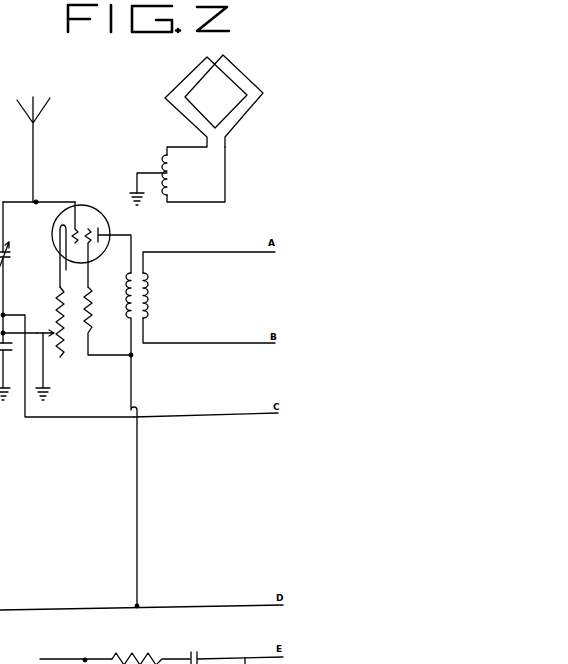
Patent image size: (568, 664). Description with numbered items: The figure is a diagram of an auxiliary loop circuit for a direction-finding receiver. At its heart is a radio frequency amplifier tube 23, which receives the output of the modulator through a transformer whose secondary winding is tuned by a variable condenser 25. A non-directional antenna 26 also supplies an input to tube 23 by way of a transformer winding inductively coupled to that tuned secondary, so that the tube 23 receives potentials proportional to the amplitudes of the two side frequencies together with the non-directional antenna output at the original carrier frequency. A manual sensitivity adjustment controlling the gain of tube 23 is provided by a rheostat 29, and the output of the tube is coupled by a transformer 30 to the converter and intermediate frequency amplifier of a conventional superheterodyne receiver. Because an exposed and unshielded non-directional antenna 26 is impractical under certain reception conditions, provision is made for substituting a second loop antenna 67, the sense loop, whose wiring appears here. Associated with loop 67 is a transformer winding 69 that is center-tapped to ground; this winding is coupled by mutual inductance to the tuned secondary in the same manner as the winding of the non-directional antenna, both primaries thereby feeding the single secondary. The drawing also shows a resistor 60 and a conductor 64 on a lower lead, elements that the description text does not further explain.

The radio frequency amplifier tube 23 is at (84, 209).
The variable condenser 25 is at (13, 266).
The non-directional antenna 26 is at (46, 113).
The rheostat 29 is at (62, 350).
The transformer 30 is at (137, 328).
The resistor 60 is at (132, 653).
The conductor 64 is at (22, 660).
The second loop antenna 67 is at (240, 62).
The transformer winding 69 is at (172, 173).